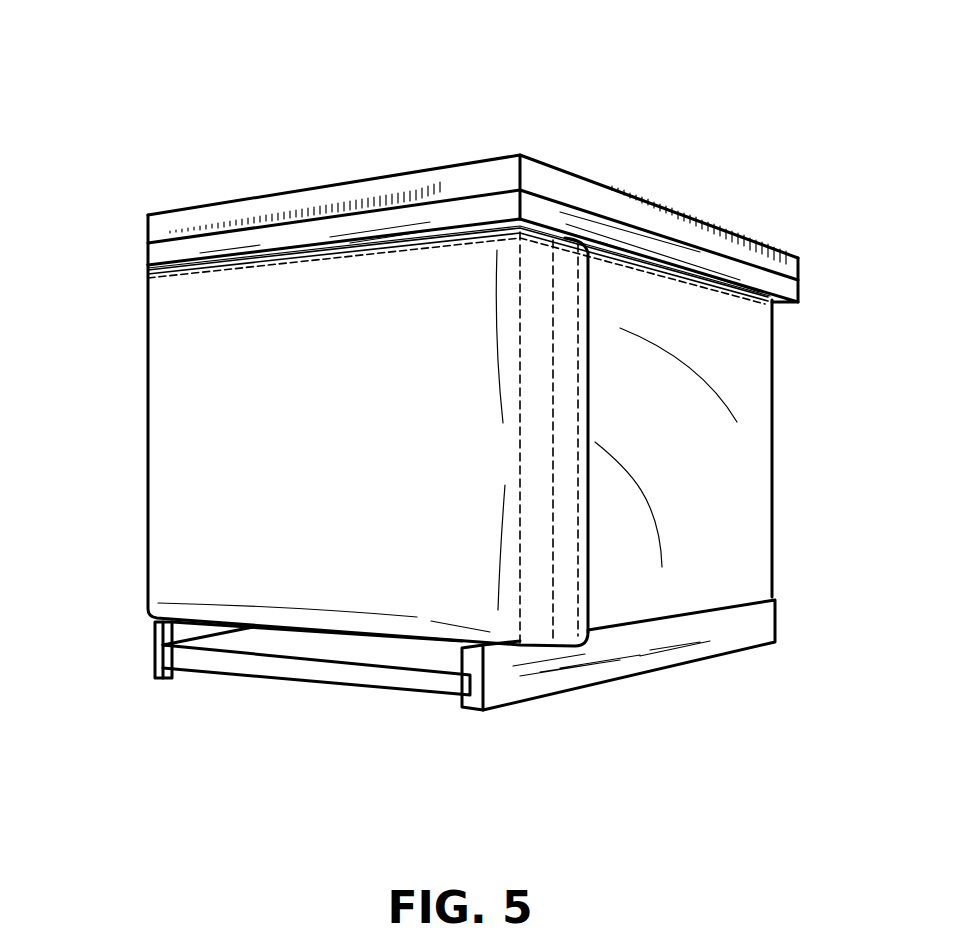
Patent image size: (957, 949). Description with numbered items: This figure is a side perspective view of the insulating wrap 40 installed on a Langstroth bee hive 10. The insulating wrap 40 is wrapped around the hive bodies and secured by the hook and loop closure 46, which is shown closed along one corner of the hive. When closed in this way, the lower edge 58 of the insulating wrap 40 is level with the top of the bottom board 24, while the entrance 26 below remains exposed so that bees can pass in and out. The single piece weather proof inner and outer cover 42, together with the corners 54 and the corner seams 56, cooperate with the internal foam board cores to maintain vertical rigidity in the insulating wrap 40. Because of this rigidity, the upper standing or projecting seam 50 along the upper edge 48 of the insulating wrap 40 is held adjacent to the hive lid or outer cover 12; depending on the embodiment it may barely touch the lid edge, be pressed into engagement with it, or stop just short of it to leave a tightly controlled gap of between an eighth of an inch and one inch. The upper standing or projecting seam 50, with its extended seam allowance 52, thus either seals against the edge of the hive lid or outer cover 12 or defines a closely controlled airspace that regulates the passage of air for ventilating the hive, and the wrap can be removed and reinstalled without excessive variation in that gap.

The Langstroth bee hive 10 is at (362, 104).
The hive lid or outer cover 12 is at (313, 185).
The bottom board 24 is at (327, 683).
The entrance 26 is at (277, 645).
The insulating wrap 40 is at (183, 365).
The single piece weather proof inner and outer cover 42 is at (222, 428).
The hook and loop closure 46 is at (565, 567).
The upper edge 48 is at (277, 251).
The upper standing or projecting seam 50 is at (225, 258).
The extended seam allowance 52 is at (178, 263).
The corners 54 is at (147, 457).
The corner seams 56 is at (147, 523).
The lower edge 58 is at (155, 670).